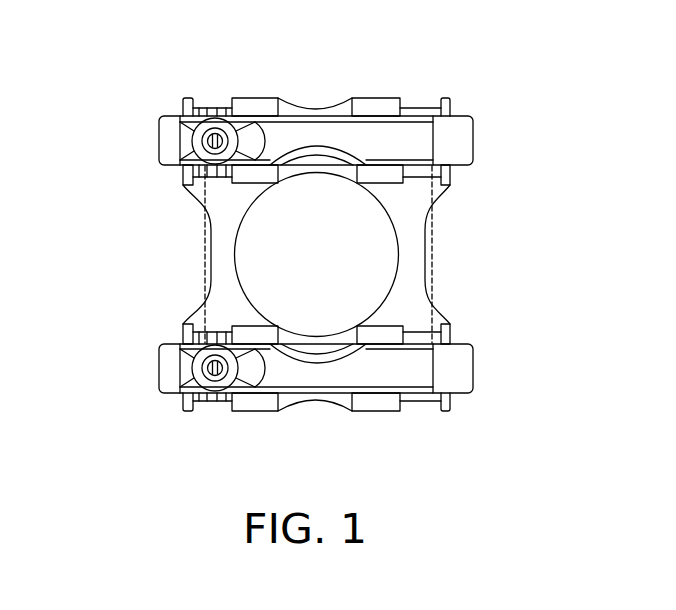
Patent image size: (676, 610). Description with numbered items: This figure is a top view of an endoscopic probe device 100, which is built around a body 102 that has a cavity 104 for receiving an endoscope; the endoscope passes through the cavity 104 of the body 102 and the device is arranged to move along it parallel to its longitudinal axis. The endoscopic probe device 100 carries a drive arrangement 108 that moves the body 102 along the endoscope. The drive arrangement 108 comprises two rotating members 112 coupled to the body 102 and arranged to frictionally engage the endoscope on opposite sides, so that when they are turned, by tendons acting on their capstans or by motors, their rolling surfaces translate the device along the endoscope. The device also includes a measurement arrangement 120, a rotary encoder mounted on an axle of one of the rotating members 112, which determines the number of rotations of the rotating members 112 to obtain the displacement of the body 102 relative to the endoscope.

The endoscopic probe device 100 is at (143, 72).
The body 102 is at (411, 197).
The cavity 104 is at (340, 267).
The drive arrangement 108 is at (320, 108).
The rotating members 112 is at (385, 402).
The measurement arrangement 120 is at (396, 113).